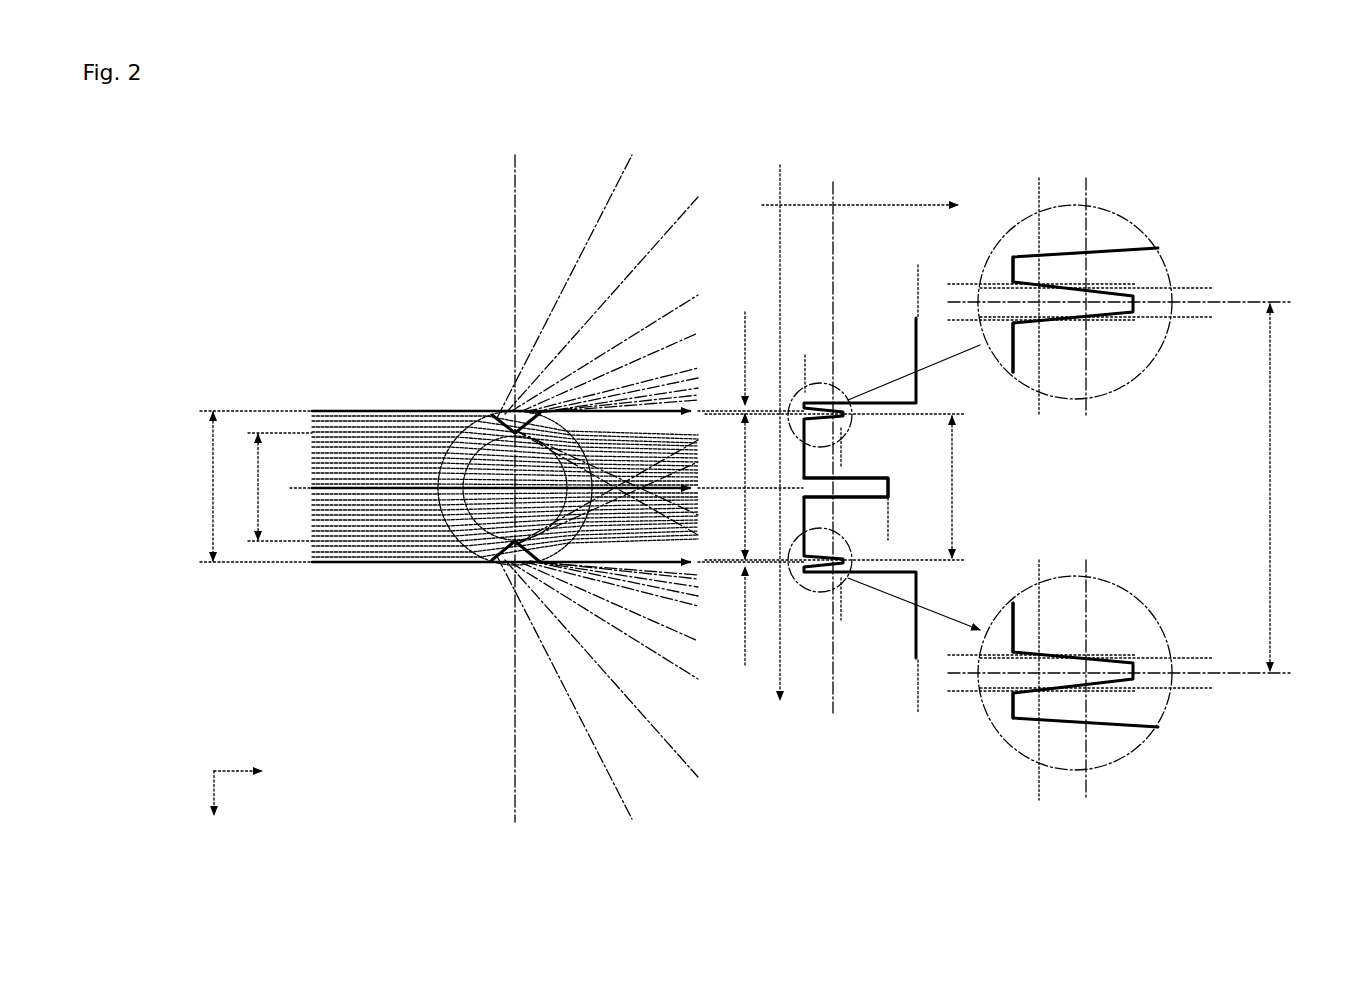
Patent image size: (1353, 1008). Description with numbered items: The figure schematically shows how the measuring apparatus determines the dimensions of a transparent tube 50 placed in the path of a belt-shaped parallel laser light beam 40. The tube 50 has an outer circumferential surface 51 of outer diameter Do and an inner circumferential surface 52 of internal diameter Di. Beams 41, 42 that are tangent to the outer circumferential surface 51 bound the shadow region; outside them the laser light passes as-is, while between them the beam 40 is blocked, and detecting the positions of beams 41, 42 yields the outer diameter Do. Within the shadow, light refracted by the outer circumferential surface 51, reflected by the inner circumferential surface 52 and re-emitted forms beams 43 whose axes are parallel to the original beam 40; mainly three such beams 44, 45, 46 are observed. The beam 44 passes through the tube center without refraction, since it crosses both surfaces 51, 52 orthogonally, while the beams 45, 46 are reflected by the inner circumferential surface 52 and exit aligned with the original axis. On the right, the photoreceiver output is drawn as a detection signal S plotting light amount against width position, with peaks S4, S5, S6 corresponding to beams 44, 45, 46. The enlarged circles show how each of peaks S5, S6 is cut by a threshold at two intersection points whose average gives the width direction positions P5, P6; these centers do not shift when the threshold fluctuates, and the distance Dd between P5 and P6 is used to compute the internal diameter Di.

The parallel laser light beam 40 is at (360, 436).
The beam tangent to outer circumferential surface 41 is at (375, 411).
The beam tangent to outer circumferential surface 42 is at (352, 564).
The emitted beams 43 is at (580, 340).
The beam 44 is at (625, 562).
The beam 45 is at (678, 400).
The beam 46 is at (678, 575).
The transparent tube 50 is at (497, 484).
The outer circumferential surface 51 is at (456, 540).
The inner circumferential surface 52 is at (471, 562).
The detection signal S is at (869, 559).
The peak S4 is at (890, 488).
The peak S5 is at (838, 402).
The peak S6 is at (834, 584).
The width direction position P5 is at (1012, 358).
The width direction position P6 is at (1012, 616).
The distance Dd is at (1129, 487).
The outer diameter Do is at (249, 486).
The internal diameter Di is at (273, 487).